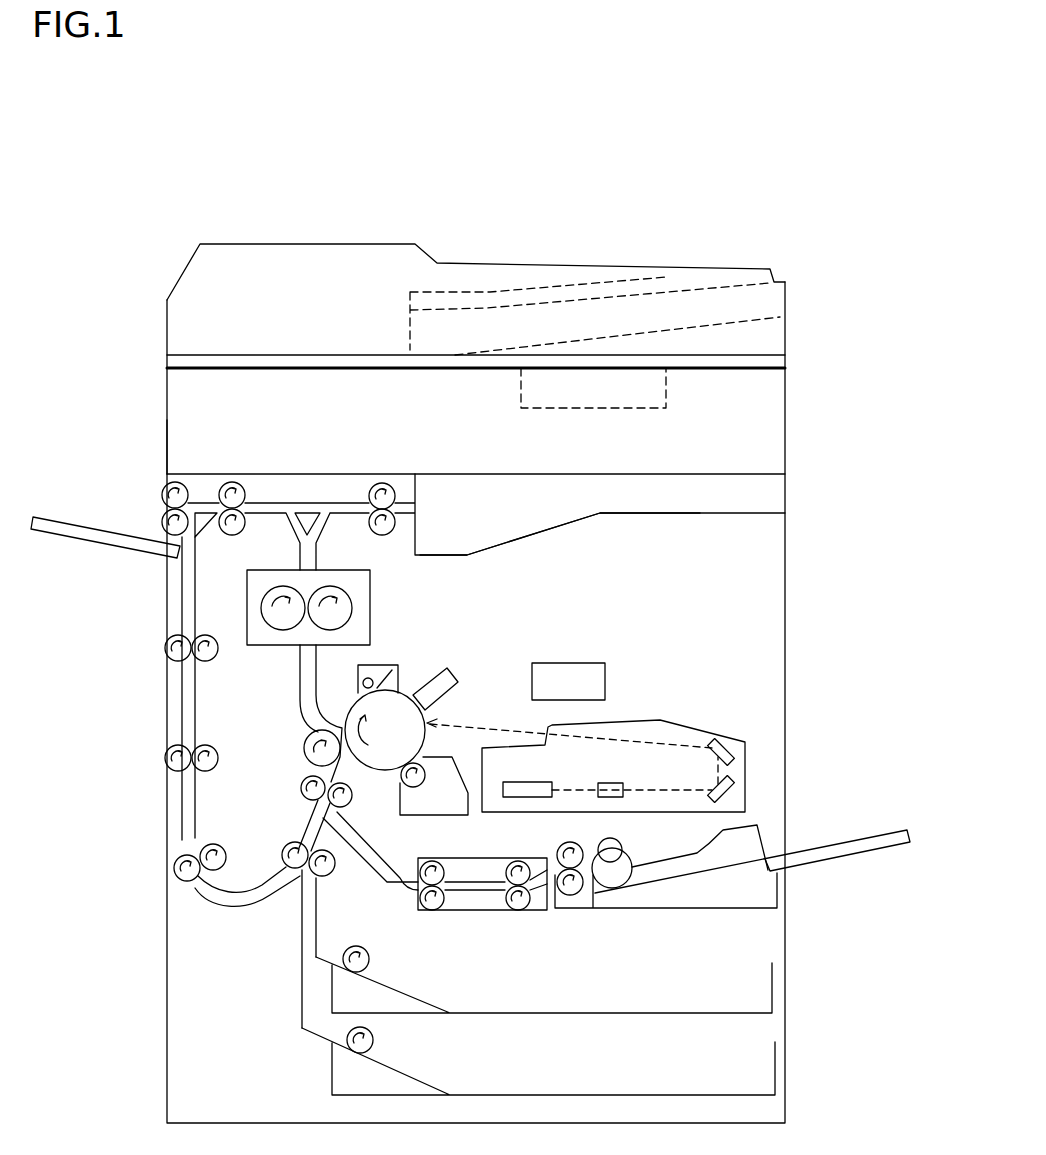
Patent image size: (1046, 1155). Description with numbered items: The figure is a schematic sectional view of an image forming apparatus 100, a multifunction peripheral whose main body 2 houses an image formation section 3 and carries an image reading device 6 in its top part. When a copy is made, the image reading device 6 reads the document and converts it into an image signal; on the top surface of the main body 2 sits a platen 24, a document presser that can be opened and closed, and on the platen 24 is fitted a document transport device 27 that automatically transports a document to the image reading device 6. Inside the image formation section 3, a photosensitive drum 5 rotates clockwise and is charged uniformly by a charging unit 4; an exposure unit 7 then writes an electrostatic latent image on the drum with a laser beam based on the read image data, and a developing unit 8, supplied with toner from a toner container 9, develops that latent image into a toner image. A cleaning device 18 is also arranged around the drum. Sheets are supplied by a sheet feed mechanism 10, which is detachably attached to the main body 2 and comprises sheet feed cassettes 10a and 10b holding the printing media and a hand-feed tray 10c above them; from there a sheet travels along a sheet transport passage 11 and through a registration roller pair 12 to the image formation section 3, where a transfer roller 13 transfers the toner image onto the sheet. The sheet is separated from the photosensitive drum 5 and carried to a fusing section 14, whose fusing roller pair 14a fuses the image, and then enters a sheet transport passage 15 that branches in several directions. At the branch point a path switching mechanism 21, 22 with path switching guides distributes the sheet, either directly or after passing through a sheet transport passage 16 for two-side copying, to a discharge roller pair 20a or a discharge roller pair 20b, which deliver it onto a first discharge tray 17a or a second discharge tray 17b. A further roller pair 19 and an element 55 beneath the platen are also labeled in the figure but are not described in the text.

The image forming apparatus 100 is at (700, 235).
The main body 2 is at (786, 572).
The image formation section 3 is at (447, 645).
The charging unit 4 is at (445, 687).
The photosensitive drum 5 is at (367, 757).
The image reading device 6 is at (177, 430).
The exposure unit 7 is at (640, 735).
The developing unit 8 is at (433, 802).
The toner container 9 is at (570, 668).
The sheet feed mechanism 10 is at (810, 938).
The sheet feed cassette 10a is at (757, 995).
The sheet feed cassette 10b is at (757, 1080).
The hand-feed tray 10c is at (813, 852).
The sheet transport passage 11 is at (298, 902).
The registration roller pair 12 is at (308, 800).
The transfer roller 13 is at (308, 752).
The fusing section 14 is at (249, 604).
The fusing roller pair 14a is at (343, 606).
The sheet transport passage 15 is at (298, 552).
The sheet transport passage for two-side copying 16 is at (185, 692).
The first discharge tray 17a is at (560, 525).
The second discharge tray 17b is at (78, 520).
The cleaning device 18 is at (380, 668).
The reverse roller pair 19 is at (243, 483).
The discharge roller pair 20a is at (390, 482).
The discharge roller pair 20b is at (158, 490).
The path switching mechanism 21 is at (321, 505).
The path switching mechanism 22 is at (217, 527).
The platen 24 is at (786, 360).
The document transport device 27 is at (207, 281).
The image reading sensor 55 is at (590, 410).